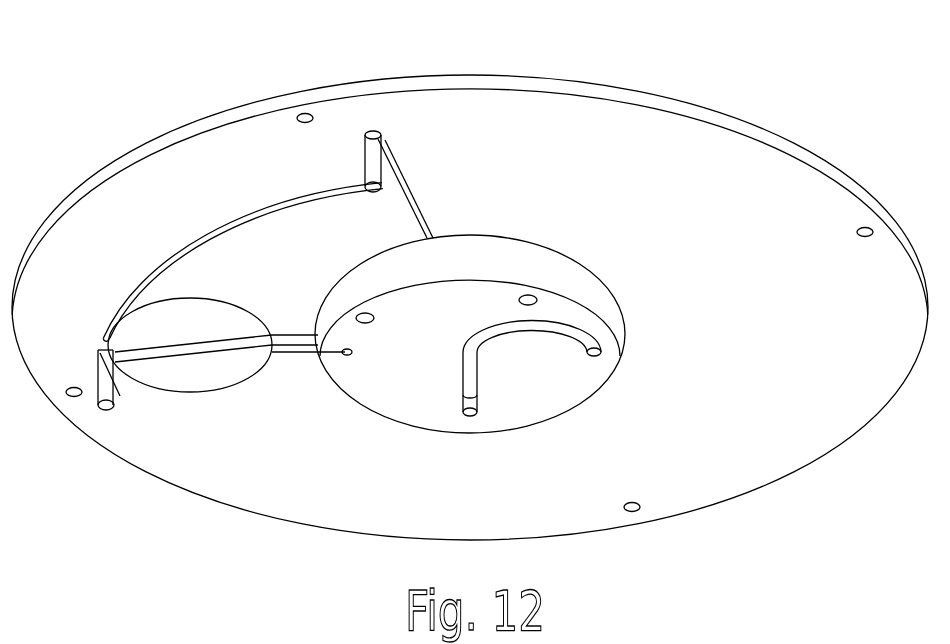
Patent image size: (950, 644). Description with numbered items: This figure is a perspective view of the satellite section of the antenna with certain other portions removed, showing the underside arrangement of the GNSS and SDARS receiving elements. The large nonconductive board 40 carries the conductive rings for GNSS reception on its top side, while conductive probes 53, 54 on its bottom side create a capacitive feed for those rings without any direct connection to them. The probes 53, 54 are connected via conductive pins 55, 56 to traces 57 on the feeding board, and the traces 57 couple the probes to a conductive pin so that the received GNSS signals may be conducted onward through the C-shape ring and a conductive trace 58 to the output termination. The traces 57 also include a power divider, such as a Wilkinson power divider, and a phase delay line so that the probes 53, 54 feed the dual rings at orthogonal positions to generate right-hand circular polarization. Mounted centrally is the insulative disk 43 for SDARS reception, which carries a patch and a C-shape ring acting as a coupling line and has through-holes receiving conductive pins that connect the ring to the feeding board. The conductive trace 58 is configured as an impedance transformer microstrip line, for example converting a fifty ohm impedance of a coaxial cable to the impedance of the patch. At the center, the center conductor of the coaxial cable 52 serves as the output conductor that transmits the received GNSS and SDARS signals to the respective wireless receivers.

The nonconductive board 40 is at (700, 104).
The insulative disk 43 is at (567, 268).
The coaxial cable 52 is at (463, 382).
The conductive probe 53 is at (413, 204).
The conductive probe 54 is at (291, 335).
The conductive pin 55 is at (121, 393).
The conductive pin 56 is at (366, 160).
The traces 57 is at (215, 393).
The conductive trace 58 is at (577, 340).